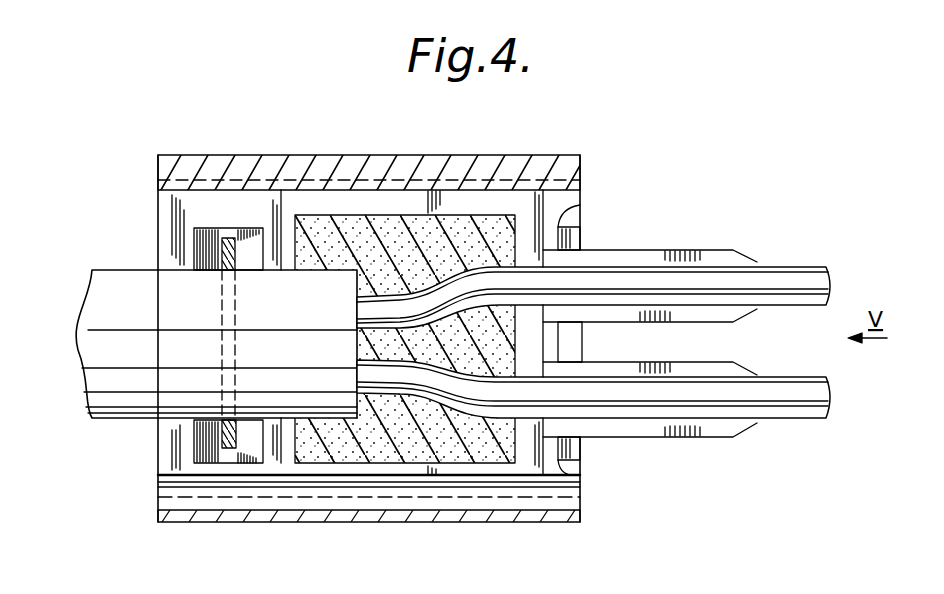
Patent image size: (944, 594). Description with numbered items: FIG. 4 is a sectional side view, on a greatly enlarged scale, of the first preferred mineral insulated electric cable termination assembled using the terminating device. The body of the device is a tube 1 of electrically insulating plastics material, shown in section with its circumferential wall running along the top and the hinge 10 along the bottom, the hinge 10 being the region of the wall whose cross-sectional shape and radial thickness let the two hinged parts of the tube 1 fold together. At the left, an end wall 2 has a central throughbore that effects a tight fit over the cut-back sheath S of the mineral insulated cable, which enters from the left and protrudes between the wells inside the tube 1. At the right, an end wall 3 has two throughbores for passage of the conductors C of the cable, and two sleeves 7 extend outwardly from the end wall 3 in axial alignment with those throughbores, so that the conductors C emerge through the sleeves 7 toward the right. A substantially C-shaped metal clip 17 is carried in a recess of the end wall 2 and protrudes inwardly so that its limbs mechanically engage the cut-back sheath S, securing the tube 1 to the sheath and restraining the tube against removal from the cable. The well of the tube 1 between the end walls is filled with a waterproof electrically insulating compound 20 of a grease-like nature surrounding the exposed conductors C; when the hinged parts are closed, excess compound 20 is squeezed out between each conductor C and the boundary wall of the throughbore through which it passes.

The tube 1 is at (342, 153).
The end wall 2 is at (168, 228).
The end wall 3 is at (567, 200).
The sleeve 7 is at (643, 252).
The hinge 10 is at (368, 516).
The metal clip 17 is at (225, 450).
The insulating compound 20 is at (500, 463).
The cut-back sheath S is at (100, 308).
The conductor C is at (785, 274).